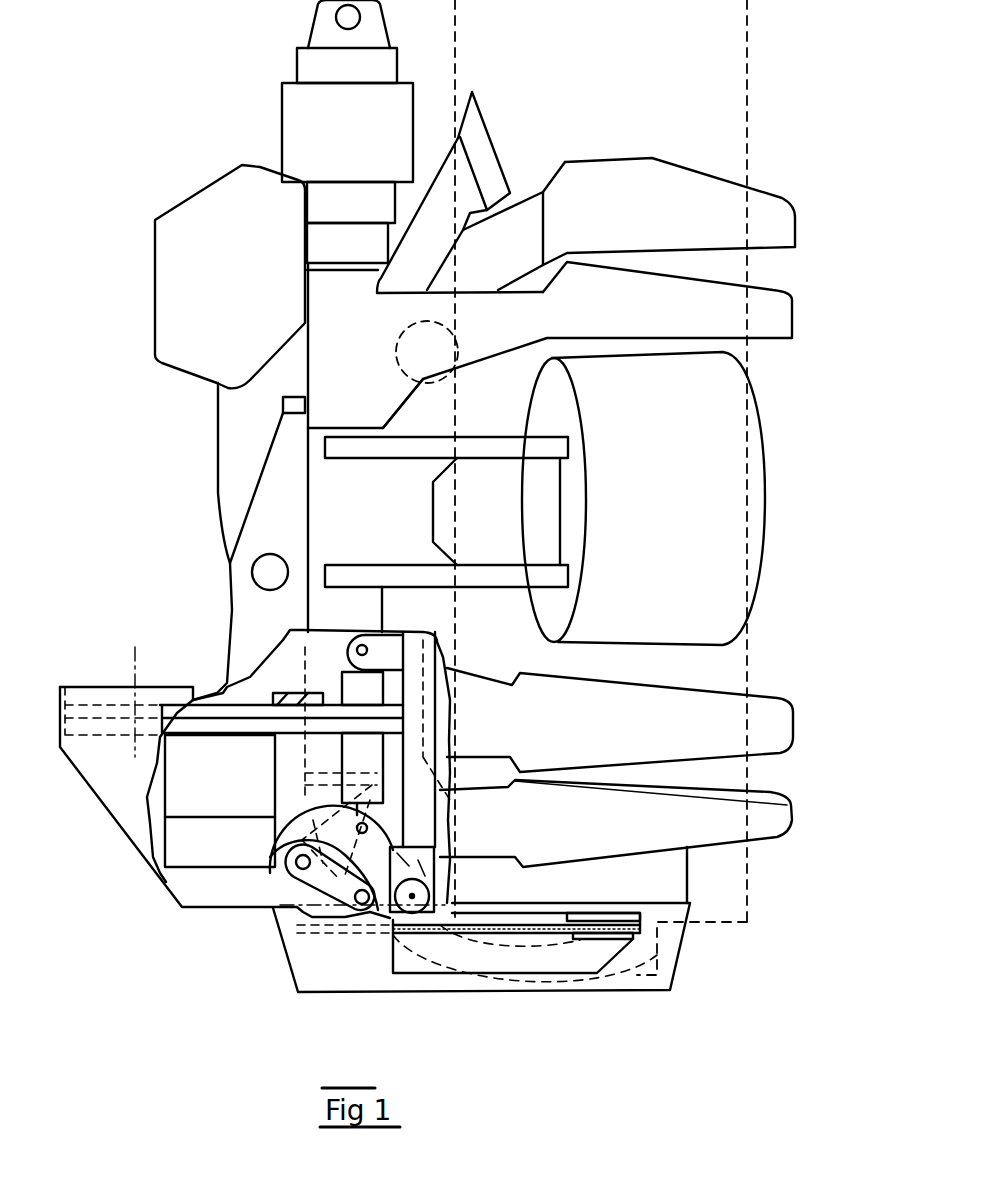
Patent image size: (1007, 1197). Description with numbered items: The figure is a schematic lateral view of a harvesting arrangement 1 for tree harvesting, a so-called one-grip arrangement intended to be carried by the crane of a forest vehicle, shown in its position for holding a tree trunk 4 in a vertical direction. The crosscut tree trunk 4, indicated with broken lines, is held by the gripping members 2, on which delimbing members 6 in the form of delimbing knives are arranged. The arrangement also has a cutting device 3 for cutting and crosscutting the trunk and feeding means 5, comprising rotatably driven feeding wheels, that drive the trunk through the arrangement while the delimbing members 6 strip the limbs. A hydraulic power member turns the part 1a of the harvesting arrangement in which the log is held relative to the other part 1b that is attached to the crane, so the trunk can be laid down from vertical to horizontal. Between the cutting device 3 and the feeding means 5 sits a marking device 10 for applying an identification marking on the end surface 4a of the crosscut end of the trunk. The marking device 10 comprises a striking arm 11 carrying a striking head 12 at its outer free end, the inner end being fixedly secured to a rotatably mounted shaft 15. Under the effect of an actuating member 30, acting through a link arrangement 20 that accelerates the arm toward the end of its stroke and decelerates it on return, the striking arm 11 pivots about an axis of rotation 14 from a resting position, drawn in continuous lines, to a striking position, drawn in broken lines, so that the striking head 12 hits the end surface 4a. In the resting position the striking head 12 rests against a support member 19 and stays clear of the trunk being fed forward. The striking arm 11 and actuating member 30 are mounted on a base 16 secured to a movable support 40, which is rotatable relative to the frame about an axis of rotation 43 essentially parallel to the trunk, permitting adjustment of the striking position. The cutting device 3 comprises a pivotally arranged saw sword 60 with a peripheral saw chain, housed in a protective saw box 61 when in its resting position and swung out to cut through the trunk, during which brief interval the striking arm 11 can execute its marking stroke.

The harvesting arrangement 1 is at (233, 62).
The part of the harvesting arrangement 1a is at (240, 600).
The other part of the harvesting arrangement 1b is at (297, 153).
The gripping members 2 is at (785, 232).
The cutting device 3 is at (612, 892).
The tree trunk 4 is at (742, 105).
The end surface 4a is at (717, 925).
The feeding means 5 is at (780, 417).
The delimbing members 6 is at (638, 163).
The marking device 10 is at (215, 888).
The striking arm 11 is at (293, 823).
The striking head 12 is at (183, 860).
The axis of rotation 14 is at (412, 900).
The shaft 15 is at (424, 892).
The base 16 is at (420, 803).
The support member 19 is at (183, 777).
The link arrangement 20 is at (295, 890).
The actuating member 30 is at (370, 692).
The movable support 40 is at (252, 690).
The axis of rotation 43 is at (128, 670).
The saw sword 60 is at (523, 927).
The saw box 61 is at (672, 962).